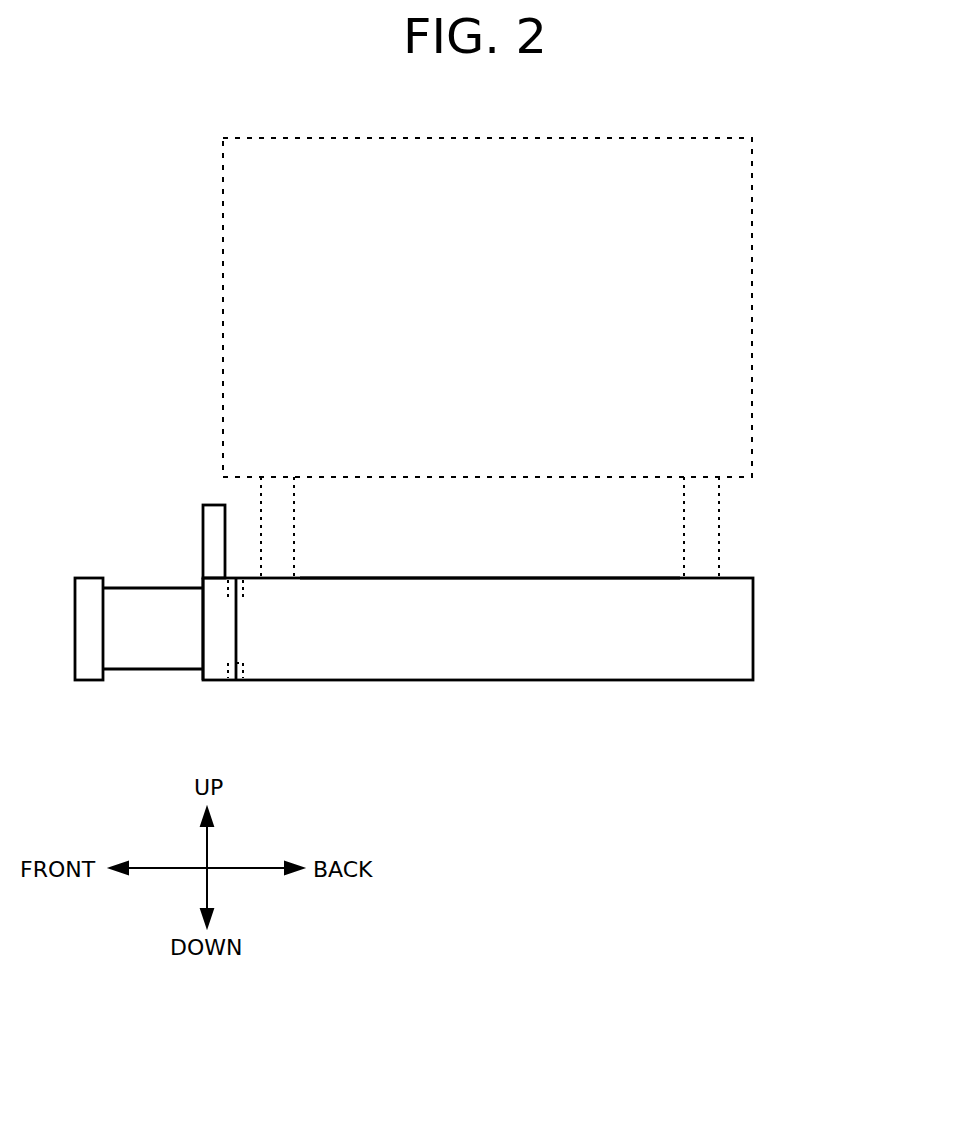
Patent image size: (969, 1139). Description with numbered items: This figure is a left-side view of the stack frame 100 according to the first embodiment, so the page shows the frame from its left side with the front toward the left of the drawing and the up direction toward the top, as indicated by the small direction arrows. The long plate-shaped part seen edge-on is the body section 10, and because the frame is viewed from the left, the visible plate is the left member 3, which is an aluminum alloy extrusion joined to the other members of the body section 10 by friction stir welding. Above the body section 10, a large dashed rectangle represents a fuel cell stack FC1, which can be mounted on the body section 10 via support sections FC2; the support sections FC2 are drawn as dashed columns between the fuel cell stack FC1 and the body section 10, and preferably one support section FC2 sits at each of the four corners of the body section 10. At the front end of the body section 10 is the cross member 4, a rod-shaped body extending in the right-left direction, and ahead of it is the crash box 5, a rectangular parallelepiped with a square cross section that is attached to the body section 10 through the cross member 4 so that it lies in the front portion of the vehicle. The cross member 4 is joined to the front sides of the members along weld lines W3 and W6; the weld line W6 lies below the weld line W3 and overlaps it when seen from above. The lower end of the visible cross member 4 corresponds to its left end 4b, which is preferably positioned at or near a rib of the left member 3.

The stack frame 100 is at (827, 474).
The fuel cell stack FC1 is at (753, 243).
The support section FC2 is at (721, 535).
The left member 3 is at (754, 627).
The body section 10 is at (601, 577).
The cross member 4 is at (215, 553).
The left end of the cross member 4b is at (215, 668).
The crash box 5 is at (120, 587).
The weld line W3 is at (243, 577).
The weld line W6 is at (240, 682).